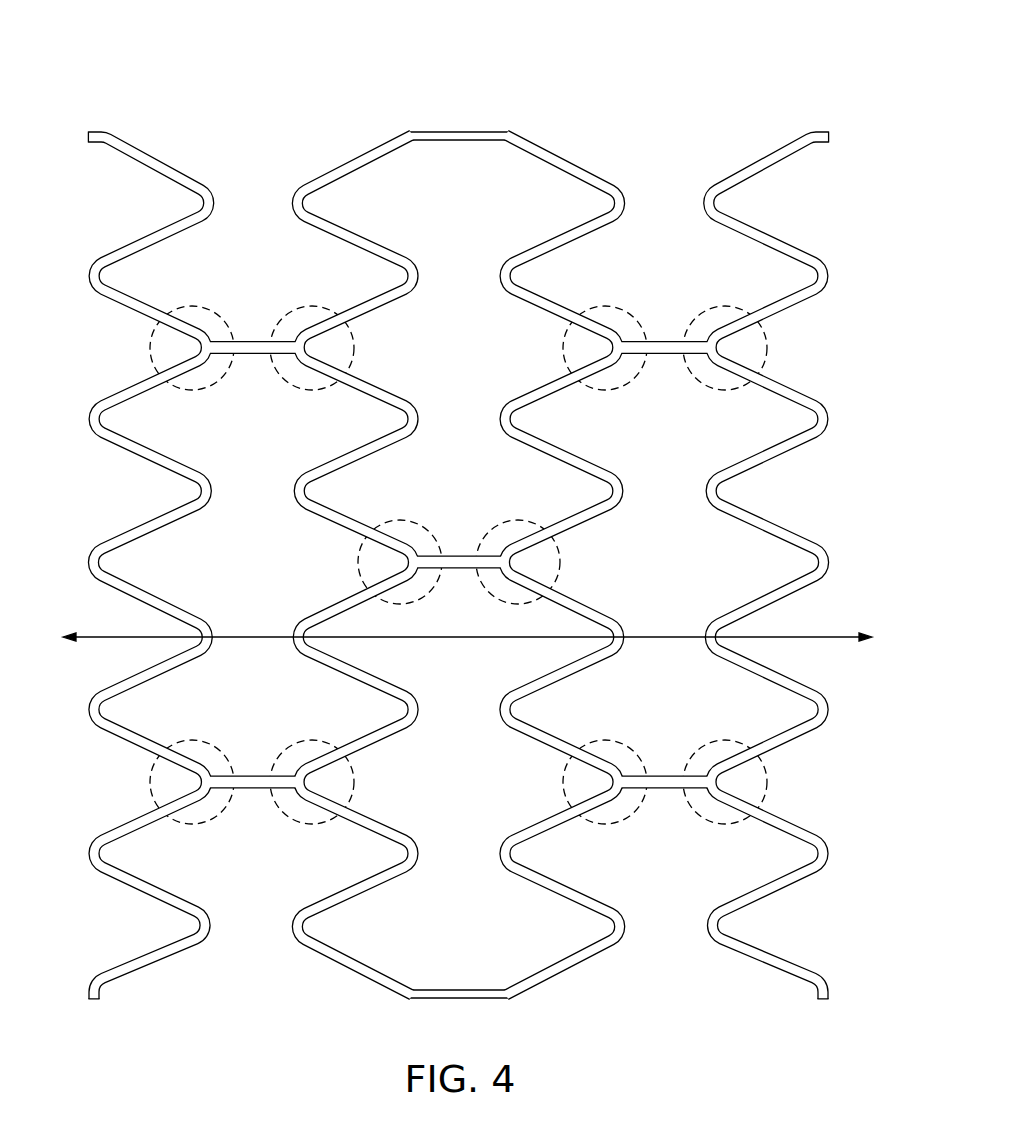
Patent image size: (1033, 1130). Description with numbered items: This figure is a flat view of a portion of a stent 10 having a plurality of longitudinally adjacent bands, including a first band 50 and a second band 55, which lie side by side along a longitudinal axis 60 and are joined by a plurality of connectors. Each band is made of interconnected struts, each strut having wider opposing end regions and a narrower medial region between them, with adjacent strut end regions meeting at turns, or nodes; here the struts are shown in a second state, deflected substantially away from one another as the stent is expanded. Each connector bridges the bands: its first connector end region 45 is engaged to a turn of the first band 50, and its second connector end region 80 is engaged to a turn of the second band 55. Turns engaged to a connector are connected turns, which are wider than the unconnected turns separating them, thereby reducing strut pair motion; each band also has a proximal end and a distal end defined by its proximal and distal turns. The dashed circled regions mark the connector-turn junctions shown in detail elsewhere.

The stent 10 is at (458, 500).
The first connector end region 45 is at (222, 368).
The first band 50 is at (150, 110).
The second band 55 is at (334, 110).
The longitudinal axis 60 is at (812, 633).
The second connector end region 80 is at (278, 365).